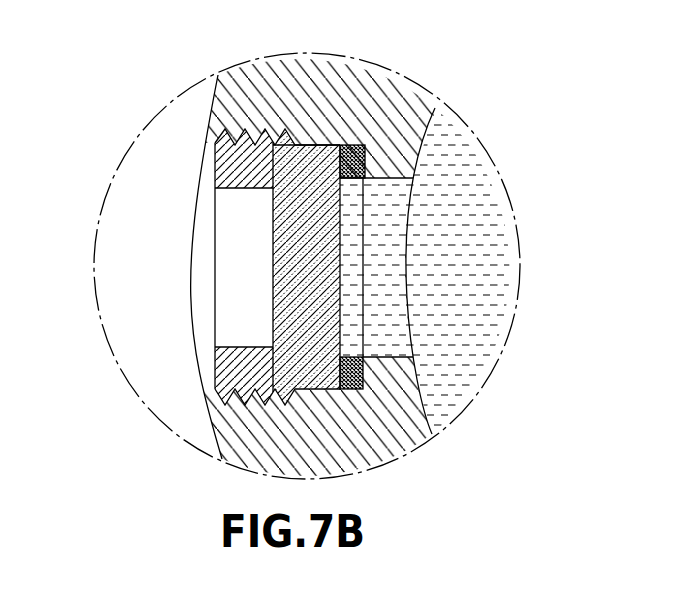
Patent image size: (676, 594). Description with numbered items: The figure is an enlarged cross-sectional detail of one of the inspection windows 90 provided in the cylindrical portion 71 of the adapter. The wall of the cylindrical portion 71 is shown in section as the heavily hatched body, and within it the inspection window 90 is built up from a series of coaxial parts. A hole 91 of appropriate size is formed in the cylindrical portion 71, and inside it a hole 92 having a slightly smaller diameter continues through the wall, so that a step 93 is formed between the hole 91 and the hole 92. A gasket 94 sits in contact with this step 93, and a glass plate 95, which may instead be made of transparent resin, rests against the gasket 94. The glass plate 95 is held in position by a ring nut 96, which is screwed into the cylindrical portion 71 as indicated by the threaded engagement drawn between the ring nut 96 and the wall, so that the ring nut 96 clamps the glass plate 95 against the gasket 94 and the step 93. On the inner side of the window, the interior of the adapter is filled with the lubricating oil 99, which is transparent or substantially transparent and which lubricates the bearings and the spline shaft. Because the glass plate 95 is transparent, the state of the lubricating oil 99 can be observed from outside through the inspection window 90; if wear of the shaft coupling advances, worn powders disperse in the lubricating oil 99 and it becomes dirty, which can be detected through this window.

The cylindrical portion 71 is at (232, 108).
The inspection window 90 is at (158, 158).
The hole 91 is at (318, 160).
The hole 92 is at (388, 179).
The step 93 is at (350, 360).
The gasket 94 is at (350, 180).
The glass plate 95 is at (300, 263).
The ring nut 96 is at (242, 373).
The lubricating oil 99 is at (491, 264).